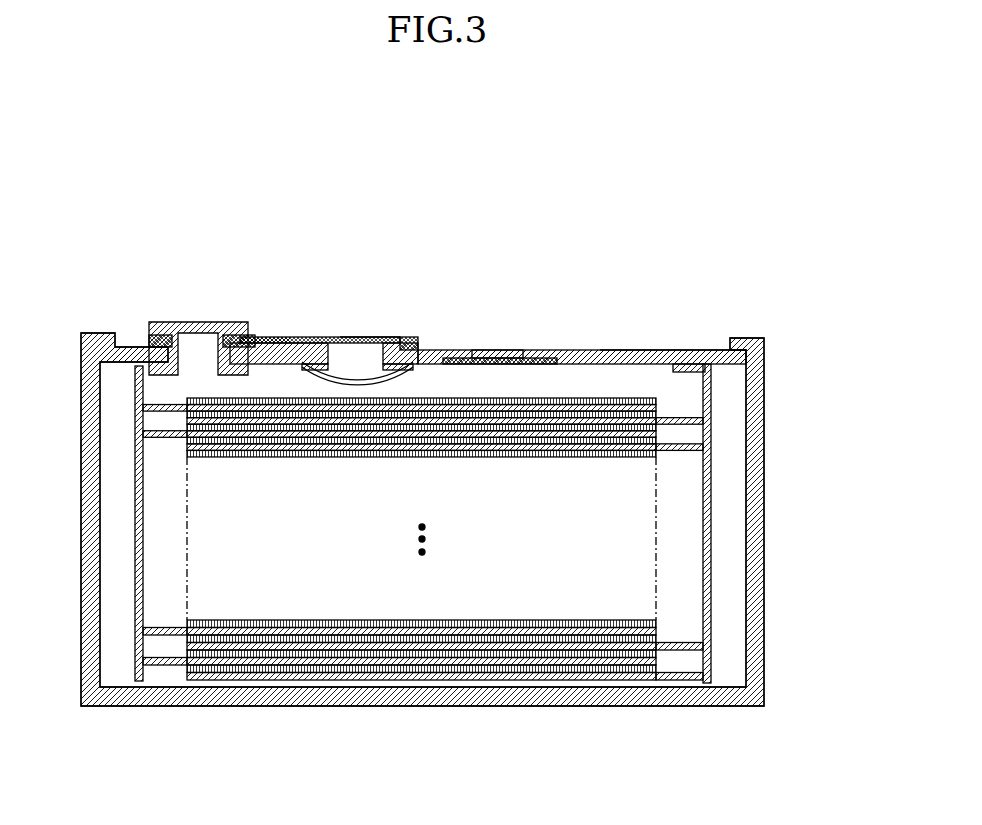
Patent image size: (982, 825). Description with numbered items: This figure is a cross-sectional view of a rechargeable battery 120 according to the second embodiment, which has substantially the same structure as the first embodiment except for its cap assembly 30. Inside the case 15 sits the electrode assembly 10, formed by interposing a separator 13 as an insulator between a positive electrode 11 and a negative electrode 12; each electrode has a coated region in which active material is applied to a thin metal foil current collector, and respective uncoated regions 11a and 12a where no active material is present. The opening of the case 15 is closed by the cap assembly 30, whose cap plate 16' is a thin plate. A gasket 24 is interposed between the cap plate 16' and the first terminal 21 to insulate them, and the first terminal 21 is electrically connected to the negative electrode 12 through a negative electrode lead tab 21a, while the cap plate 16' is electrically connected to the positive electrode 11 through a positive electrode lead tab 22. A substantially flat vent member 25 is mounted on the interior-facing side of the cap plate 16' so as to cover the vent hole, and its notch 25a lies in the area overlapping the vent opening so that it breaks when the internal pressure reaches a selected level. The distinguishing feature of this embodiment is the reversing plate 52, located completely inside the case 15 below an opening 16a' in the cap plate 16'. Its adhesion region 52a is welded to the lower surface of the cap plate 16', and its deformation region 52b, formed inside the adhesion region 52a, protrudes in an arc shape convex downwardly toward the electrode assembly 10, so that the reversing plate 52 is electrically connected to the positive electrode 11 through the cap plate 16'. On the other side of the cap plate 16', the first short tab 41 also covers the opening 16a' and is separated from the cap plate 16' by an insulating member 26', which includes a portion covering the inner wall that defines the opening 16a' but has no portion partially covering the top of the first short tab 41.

The rechargeable battery 120 is at (489, 150).
The electrode assembly 10 is at (567, 698).
The positive electrode 11 is at (408, 680).
The uncoated region 11a is at (687, 680).
The negative electrode 12 is at (285, 665).
The uncoated region 12a is at (175, 665).
The separator 13 is at (345, 670).
The case 15 is at (760, 449).
The cap plate 16' is at (673, 313).
The opening 16a' is at (369, 290).
The first terminal 21 is at (198, 322).
The negative electrode lead tab 21a is at (135, 524).
The positive electrode lead tab 22 is at (708, 542).
The gasket 24 is at (140, 347).
The vent member 25 is at (538, 350).
The notch 25a is at (497, 358).
The insulating member 26' is at (376, 321).
The cap assembly 30 is at (594, 330).
The first short tab 41 is at (315, 343).
The reversing plate 52 is at (372, 343).
The adhesion region 52a is at (277, 343).
The deformation region 52b is at (440, 345).